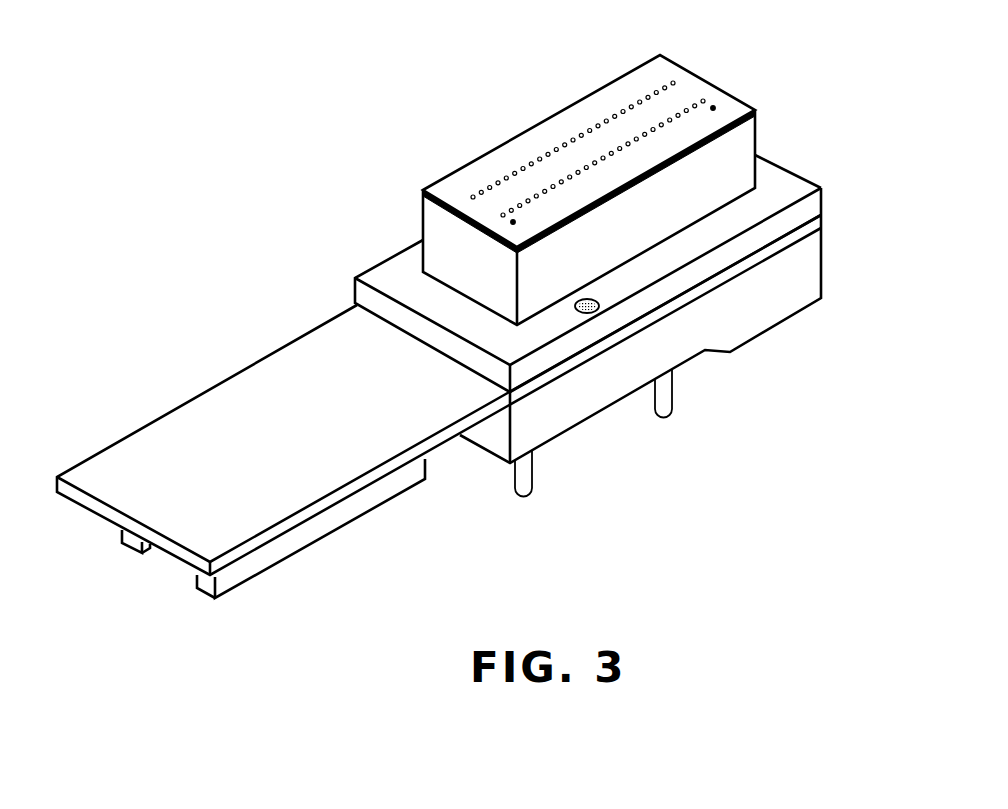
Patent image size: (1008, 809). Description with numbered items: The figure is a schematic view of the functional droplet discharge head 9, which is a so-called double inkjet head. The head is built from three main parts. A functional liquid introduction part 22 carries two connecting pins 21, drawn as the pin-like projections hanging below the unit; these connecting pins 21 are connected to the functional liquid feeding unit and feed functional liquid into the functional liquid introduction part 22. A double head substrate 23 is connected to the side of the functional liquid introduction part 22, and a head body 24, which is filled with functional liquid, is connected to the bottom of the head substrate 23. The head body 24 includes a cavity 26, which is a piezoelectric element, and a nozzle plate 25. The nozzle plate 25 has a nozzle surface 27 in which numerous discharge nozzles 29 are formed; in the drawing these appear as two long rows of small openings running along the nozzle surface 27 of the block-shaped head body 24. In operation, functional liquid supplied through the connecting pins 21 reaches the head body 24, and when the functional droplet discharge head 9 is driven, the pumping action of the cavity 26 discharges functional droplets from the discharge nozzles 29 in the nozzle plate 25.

The functional droplet discharge head 9 is at (272, 112).
The connecting pins 21 is at (525, 499).
The functional liquid introduction part 22 is at (768, 313).
The head substrate 23 is at (815, 227).
The head body 24 is at (820, 100).
The nozzle plate 25 is at (757, 112).
The cavity 26 is at (747, 137).
The nozzle surface 27 is at (477, 173).
The discharge nozzles 29 is at (562, 182).